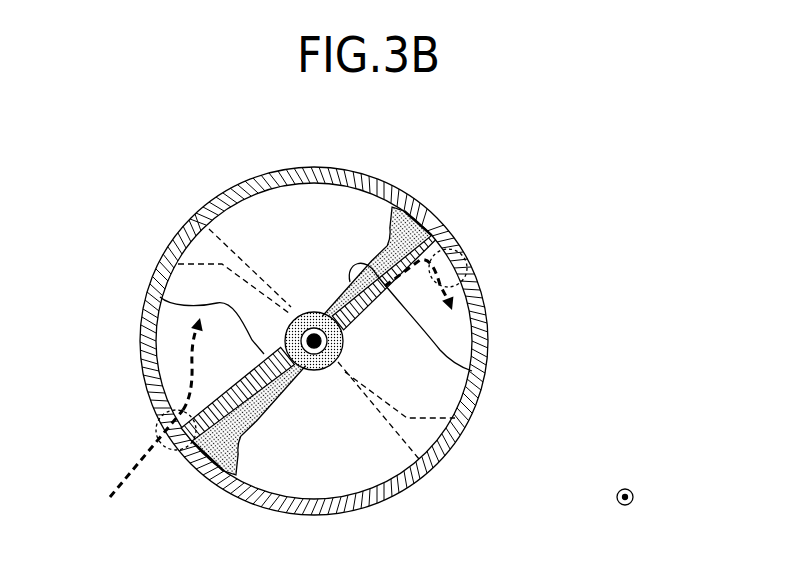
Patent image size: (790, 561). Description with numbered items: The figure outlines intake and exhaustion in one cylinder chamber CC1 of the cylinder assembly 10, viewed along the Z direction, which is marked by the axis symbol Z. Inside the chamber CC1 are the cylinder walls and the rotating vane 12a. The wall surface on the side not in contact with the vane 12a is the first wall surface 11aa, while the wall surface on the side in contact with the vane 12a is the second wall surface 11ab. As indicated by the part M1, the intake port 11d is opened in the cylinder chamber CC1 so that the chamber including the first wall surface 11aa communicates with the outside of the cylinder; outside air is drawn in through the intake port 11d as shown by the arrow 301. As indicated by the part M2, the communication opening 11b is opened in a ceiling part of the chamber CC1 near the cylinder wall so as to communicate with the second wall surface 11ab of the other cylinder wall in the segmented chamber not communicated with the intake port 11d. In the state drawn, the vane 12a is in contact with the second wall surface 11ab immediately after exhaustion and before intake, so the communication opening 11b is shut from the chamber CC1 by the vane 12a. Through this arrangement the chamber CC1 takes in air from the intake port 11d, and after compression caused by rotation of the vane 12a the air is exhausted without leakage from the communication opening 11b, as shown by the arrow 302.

The compressor mechanism / cylinder housing 10 is at (152, 198).
The cylinder chamber CC1 is at (318, 200).
The vane 12a is at (394, 207).
The communication opening 11b is at (432, 243).
The first wall surface 11aa is at (160, 298).
The second wall surface 11ab is at (484, 368).
The intake port 11d is at (150, 436).
The arrow 302 is at (450, 288).
The part M1 is at (152, 432).
The part M2 is at (465, 270).
The arrow 301 is at (124, 490).
The Z axis direction Z is at (634, 499).